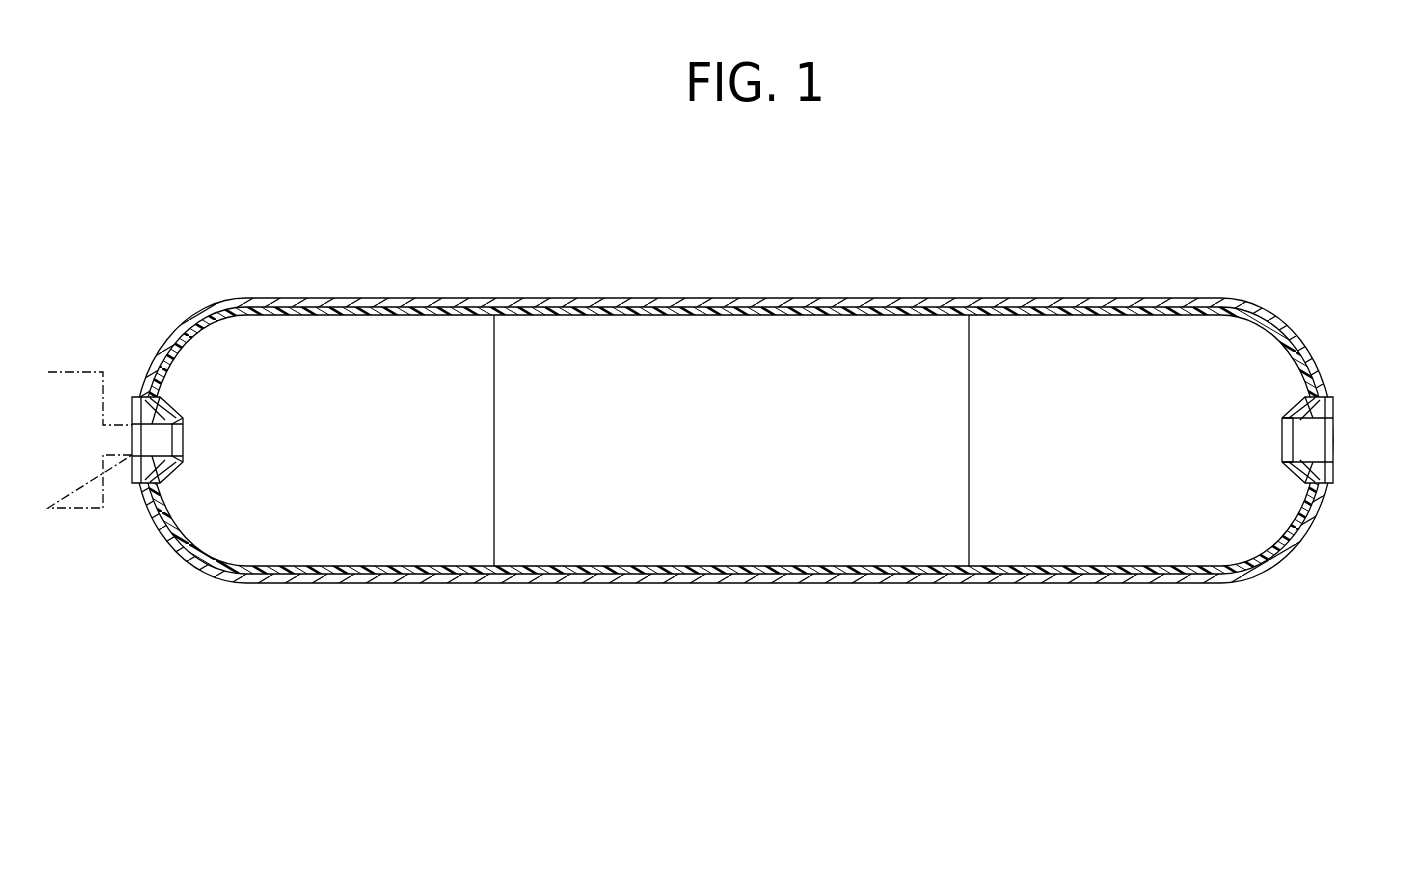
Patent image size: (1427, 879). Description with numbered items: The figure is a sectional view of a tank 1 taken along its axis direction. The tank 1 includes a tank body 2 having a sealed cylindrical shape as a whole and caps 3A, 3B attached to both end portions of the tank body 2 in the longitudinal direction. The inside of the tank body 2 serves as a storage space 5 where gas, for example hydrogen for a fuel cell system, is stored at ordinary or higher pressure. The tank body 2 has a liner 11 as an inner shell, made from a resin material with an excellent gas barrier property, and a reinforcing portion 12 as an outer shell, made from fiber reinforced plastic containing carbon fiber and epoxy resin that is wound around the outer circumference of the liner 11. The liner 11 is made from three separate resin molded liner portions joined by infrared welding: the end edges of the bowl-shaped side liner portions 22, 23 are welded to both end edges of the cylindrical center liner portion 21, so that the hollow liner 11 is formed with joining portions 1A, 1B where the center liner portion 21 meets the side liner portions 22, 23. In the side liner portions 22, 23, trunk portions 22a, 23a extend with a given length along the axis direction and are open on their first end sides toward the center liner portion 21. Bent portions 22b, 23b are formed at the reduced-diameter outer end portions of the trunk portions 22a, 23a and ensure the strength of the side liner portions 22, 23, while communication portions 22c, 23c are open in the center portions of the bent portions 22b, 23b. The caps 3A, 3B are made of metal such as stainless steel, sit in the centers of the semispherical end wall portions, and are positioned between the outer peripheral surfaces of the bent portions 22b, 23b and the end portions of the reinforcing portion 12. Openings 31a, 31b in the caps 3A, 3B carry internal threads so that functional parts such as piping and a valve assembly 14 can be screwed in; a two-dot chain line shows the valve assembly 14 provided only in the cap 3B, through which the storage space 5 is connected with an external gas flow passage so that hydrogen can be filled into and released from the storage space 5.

The tank 1 is at (847, 252).
The joining portion 1A is at (494, 480).
The joining portion 1B is at (969, 480).
The tank body 2 is at (547, 289).
The liner 11 is at (669, 330).
The reinforcing portion 12 is at (665, 291).
The center liner portion 21 is at (550, 320).
The side liner portion 22 is at (207, 318).
The trunk portion 22a is at (272, 300).
The bent portion 22b is at (186, 406).
The communication portion 22c is at (184, 439).
The side liner portion 23 is at (1250, 322).
The trunk portion 23a is at (1196, 300).
The bent portion 23b is at (1282, 406).
The communication portion 23c is at (1281, 438).
The cap 3A is at (1333, 403).
The cap 3B is at (135, 397).
The opening 31a is at (1335, 446).
The opening 31b is at (130, 448).
The storage space 5 is at (741, 469).
The valve assembly 14 is at (68, 372).